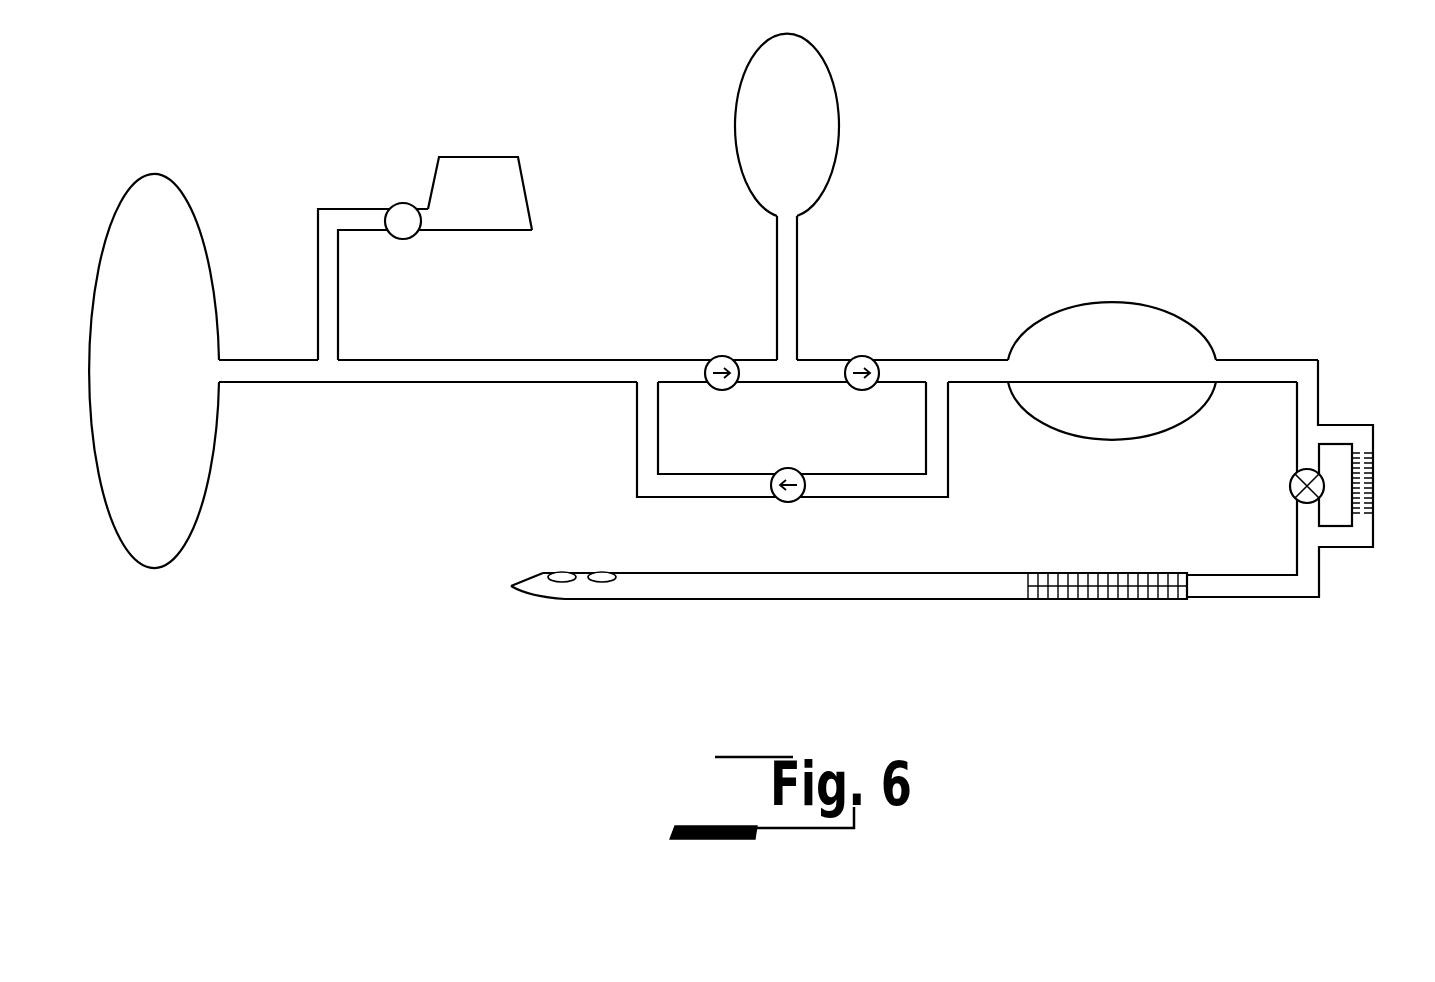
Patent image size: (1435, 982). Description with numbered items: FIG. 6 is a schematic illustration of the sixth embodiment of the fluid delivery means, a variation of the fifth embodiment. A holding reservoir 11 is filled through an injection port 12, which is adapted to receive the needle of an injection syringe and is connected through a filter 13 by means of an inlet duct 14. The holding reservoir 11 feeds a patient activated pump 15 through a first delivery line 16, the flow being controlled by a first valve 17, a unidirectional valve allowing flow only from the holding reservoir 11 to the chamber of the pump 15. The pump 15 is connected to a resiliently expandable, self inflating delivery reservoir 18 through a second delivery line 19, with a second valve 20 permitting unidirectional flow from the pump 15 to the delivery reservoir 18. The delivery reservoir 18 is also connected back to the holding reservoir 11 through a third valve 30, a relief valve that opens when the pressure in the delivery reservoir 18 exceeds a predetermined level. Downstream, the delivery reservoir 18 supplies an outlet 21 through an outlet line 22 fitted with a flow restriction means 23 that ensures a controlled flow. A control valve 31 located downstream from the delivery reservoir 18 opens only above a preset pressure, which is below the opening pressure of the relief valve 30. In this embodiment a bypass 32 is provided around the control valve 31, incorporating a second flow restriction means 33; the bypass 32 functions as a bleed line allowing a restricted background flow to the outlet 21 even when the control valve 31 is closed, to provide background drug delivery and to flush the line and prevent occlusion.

The holding reservoir 11 is at (186, 241).
The injection port 12 is at (527, 183).
The filter 13 is at (407, 203).
The inlet duct 14 is at (330, 209).
The pump 15 is at (832, 82).
The first delivery line 16 is at (580, 360).
The first valve 17 is at (720, 357).
The delivery reservoir 18 is at (1143, 305).
The second delivery line 19 is at (968, 360).
The second valve 20 is at (863, 357).
The outlet 21 is at (593, 573).
The outlet line 22 is at (1300, 523).
The flow restriction means 23 is at (1107, 600).
The third valve 30 is at (793, 470).
The control valve 31 is at (1290, 477).
The bypass 32 is at (1362, 425).
The second flow restriction means 33 is at (1373, 503).